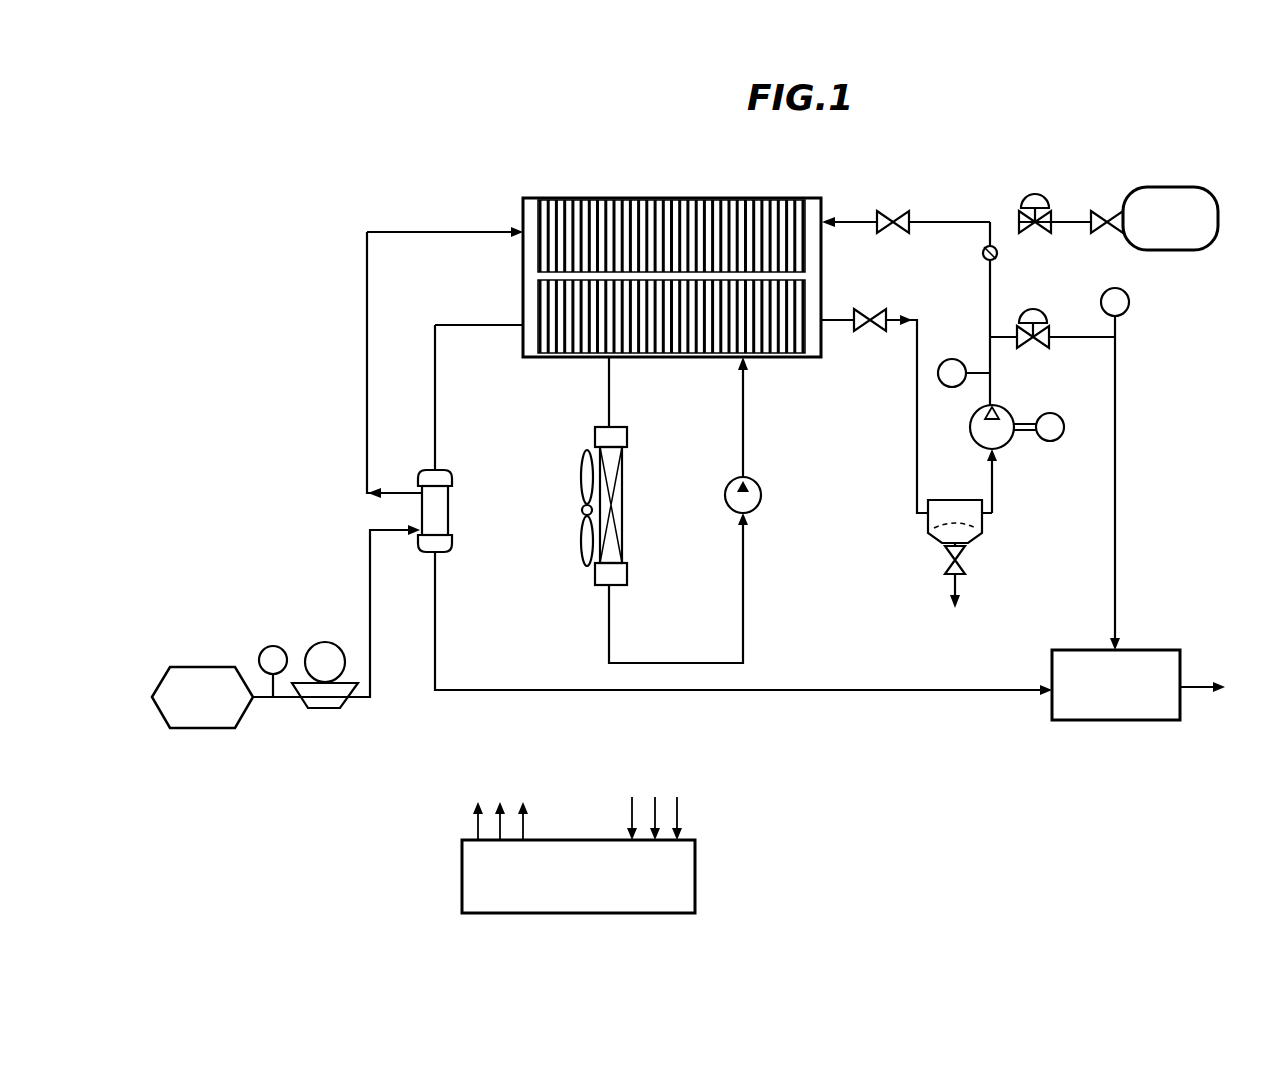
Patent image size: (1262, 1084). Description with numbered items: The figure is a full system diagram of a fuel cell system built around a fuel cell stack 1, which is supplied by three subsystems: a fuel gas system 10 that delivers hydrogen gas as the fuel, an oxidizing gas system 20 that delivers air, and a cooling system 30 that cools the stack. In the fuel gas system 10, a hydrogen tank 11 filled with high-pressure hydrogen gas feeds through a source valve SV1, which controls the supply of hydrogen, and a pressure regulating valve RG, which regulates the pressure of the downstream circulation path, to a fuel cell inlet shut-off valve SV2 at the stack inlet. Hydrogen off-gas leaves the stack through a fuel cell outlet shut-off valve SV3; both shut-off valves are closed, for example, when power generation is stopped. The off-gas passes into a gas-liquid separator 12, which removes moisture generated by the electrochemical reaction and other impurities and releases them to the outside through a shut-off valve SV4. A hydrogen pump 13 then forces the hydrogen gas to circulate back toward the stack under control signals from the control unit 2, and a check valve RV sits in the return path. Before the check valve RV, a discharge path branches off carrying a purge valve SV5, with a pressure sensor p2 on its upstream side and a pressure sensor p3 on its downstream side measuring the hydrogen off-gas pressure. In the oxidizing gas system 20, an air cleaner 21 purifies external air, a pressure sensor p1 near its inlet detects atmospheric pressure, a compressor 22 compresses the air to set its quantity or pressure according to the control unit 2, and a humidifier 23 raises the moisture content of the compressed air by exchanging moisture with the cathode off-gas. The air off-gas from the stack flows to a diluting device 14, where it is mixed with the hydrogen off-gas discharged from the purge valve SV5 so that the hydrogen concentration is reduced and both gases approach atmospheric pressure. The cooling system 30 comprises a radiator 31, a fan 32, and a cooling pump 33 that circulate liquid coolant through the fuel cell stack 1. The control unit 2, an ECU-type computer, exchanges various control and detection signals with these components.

The fuel cell stack 1 is at (680, 197).
The control unit 2 is at (695, 880).
The fuel gas system 10 is at (964, 274).
The hydrogen tank 11 is at (1175, 187).
The gas-liquid separator 12 is at (965, 500).
The hydrogen pump 13 is at (1006, 446).
The diluting device 14 is at (1135, 650).
The oxidizing gas system 20 is at (414, 402).
The air cleaner 21 is at (190, 667).
The compressor 22 is at (330, 642).
The humidifier 23 is at (452, 478).
The cooling system 30 is at (694, 644).
The radiator 31 is at (627, 440).
The fan 32 is at (580, 548).
The cooling pump 33 is at (761, 496).
The source valve SV1 is at (1103, 210).
The fuel cell inlet shut-off valve SV2 is at (922, 192).
The fuel cell outlet shut-off valve SV3 is at (866, 309).
The shut-off valve SV4 is at (966, 556).
The purge valve SV5 is at (1031, 350).
The pressure regulating valve RG is at (1038, 194).
The check valve RV is at (997, 256).
The pressure sensor p1 is at (268, 646).
The pressure sensor p2 is at (948, 359).
The pressure sensor p3 is at (1129, 300).